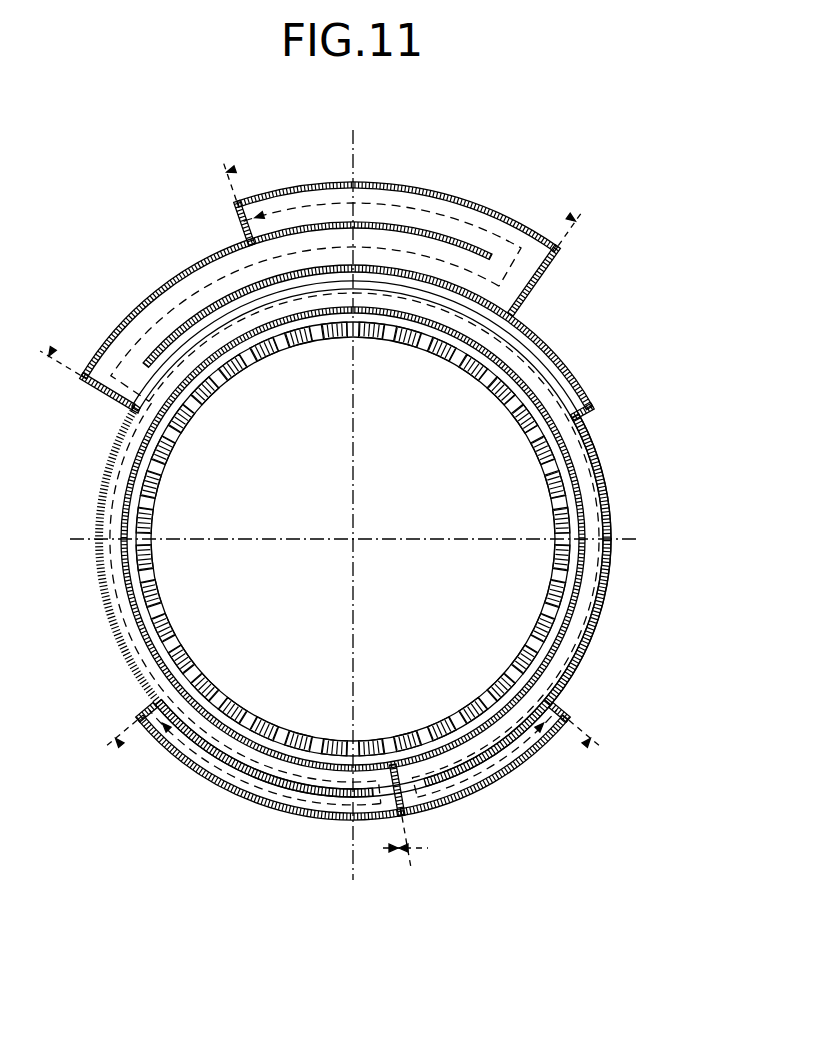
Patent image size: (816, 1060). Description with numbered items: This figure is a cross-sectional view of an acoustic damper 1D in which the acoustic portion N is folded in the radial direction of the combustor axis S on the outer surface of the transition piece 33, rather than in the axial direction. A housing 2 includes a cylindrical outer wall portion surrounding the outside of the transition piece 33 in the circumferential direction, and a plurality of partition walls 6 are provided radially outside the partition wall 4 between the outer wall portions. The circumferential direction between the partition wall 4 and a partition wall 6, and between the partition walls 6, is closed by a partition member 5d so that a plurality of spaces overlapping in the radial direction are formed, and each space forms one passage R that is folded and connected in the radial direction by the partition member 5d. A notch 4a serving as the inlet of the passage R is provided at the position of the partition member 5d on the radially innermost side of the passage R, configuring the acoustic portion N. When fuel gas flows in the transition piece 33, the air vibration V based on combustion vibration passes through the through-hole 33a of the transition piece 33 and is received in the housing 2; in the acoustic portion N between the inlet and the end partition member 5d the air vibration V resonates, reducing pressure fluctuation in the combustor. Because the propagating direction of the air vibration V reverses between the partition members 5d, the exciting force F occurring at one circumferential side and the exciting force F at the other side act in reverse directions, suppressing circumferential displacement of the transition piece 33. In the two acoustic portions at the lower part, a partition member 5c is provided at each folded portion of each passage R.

The acoustic damper 1D is at (620, 203).
The housing 2 is at (503, 208).
The partition wall 4 is at (582, 592).
The notch 4a is at (128, 413).
The partition member 5c is at (400, 818).
The partition member 5d is at (357, 555).
The partition wall 6 is at (382, 226).
The transition piece 33 is at (530, 656).
The through-hole 33a is at (488, 696).
The acoustic portion N is at (283, 192).
The passage R is at (318, 198).
The combustor axis S is at (357, 534).
The air vibration V is at (474, 205).
The exciting force F is at (237, 170).